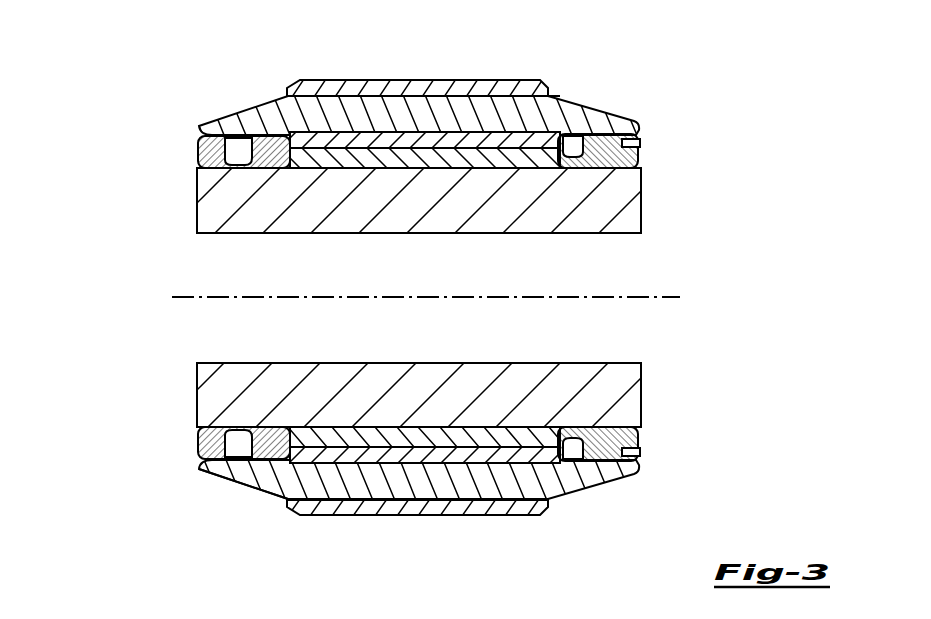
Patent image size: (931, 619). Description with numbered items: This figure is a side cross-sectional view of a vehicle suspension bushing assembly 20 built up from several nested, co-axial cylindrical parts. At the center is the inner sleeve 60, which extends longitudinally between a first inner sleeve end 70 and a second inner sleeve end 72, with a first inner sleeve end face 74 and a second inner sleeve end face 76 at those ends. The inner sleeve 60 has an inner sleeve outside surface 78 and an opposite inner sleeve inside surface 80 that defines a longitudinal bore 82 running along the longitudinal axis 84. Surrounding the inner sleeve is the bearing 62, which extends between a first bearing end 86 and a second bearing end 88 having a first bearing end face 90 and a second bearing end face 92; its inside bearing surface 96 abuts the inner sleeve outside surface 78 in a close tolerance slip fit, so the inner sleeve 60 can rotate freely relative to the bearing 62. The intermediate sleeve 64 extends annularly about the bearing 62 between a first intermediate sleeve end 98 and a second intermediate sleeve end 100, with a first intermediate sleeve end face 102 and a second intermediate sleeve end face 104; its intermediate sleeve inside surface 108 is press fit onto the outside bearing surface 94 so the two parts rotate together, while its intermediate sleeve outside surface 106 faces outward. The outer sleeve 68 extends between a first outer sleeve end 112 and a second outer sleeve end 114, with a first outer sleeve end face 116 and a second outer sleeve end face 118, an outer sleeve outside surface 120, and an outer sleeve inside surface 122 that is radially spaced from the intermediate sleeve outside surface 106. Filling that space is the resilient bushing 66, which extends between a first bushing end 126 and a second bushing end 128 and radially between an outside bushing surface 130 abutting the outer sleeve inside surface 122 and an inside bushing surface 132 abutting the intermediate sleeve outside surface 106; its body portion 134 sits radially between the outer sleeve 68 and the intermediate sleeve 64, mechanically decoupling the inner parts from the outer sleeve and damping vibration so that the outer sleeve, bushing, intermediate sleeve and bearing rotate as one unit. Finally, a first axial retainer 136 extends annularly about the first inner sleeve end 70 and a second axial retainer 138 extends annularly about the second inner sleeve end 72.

The vehicle suspension bushing assembly 20 is at (157, 88).
The inner sleeve 60 is at (420, 297).
The bearing 62 is at (433, 277).
The intermediate sleeve 64 is at (414, 294).
The bushing 66 is at (433, 277).
The outer sleeve 68 is at (447, 291).
The first inner sleeve end 70 is at (628, 214).
The second inner sleeve end 72 is at (202, 212).
The first inner sleeve end face 74 is at (642, 400).
The second inner sleeve end face 76 is at (196, 402).
The inner sleeve outside surface 78 is at (431, 157).
The inner sleeve inside surface 80 is at (431, 305).
The longitudinal bore 82 is at (207, 278).
The longitudinal axis 84 is at (676, 292).
The first bearing end 86 is at (429, 355).
The second bearing end 88 is at (431, 214).
The first bearing end face 90 is at (606, 167).
The second bearing end face 92 is at (211, 96).
The outside bearing surface 94 is at (388, 450).
The inside bearing surface 96 is at (427, 442).
The first intermediate sleeve end 98 is at (634, 136).
The second intermediate sleeve end 100 is at (264, 130).
The first intermediate sleeve end face 102 is at (634, 143).
The second intermediate sleeve end face 104 is at (204, 96).
The intermediate sleeve outside surface 106 is at (483, 467).
The intermediate sleeve inside surface 108 is at (426, 448).
The first outer sleeve end 112 is at (447, 48).
The second outer sleeve end 114 is at (299, 78).
The first outer sleeve end face 116 is at (414, 537).
The second outer sleeve end face 118 is at (283, 506).
The outer sleeve outside surface 120 is at (447, 291).
The outer sleeve inside surface 122 is at (414, 98).
The first bushing end 126 is at (600, 476).
The second bushing end 128 is at (225, 472).
The outside bushing surface 130 is at (363, 95).
The inside bushing surface 132 is at (382, 134).
The body portion 134 is at (363, 172).
The first axial retainer 136 is at (605, 440).
The second axial retainer 138 is at (215, 440).